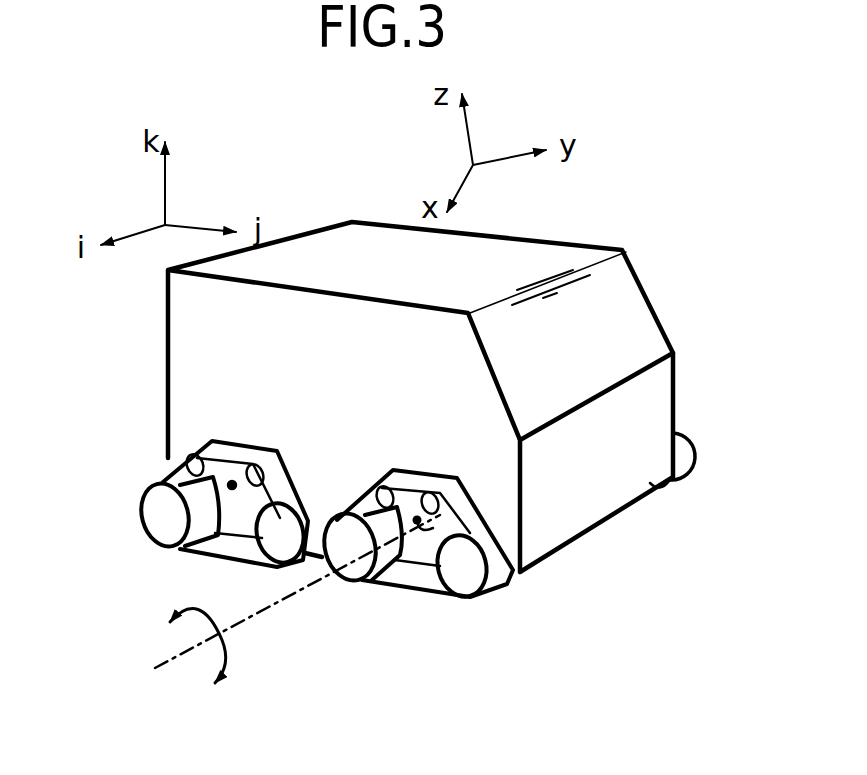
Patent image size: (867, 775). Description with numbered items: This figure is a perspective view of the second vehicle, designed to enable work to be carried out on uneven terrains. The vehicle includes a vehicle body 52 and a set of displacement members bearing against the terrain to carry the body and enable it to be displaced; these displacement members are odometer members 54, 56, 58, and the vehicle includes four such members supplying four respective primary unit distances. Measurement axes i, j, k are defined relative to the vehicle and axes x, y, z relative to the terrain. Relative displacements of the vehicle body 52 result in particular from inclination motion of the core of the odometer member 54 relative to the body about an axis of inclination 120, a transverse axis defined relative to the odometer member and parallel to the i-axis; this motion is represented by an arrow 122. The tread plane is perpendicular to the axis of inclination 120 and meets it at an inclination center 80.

The vehicle body 52 is at (168, 322).
The odometer member 54 is at (411, 592).
The odometer member 56 is at (690, 462).
The odometer member 58 is at (183, 552).
The inclination center 80 is at (430, 519).
The axis of inclination 120 is at (173, 657).
The arrow 122 is at (226, 643).